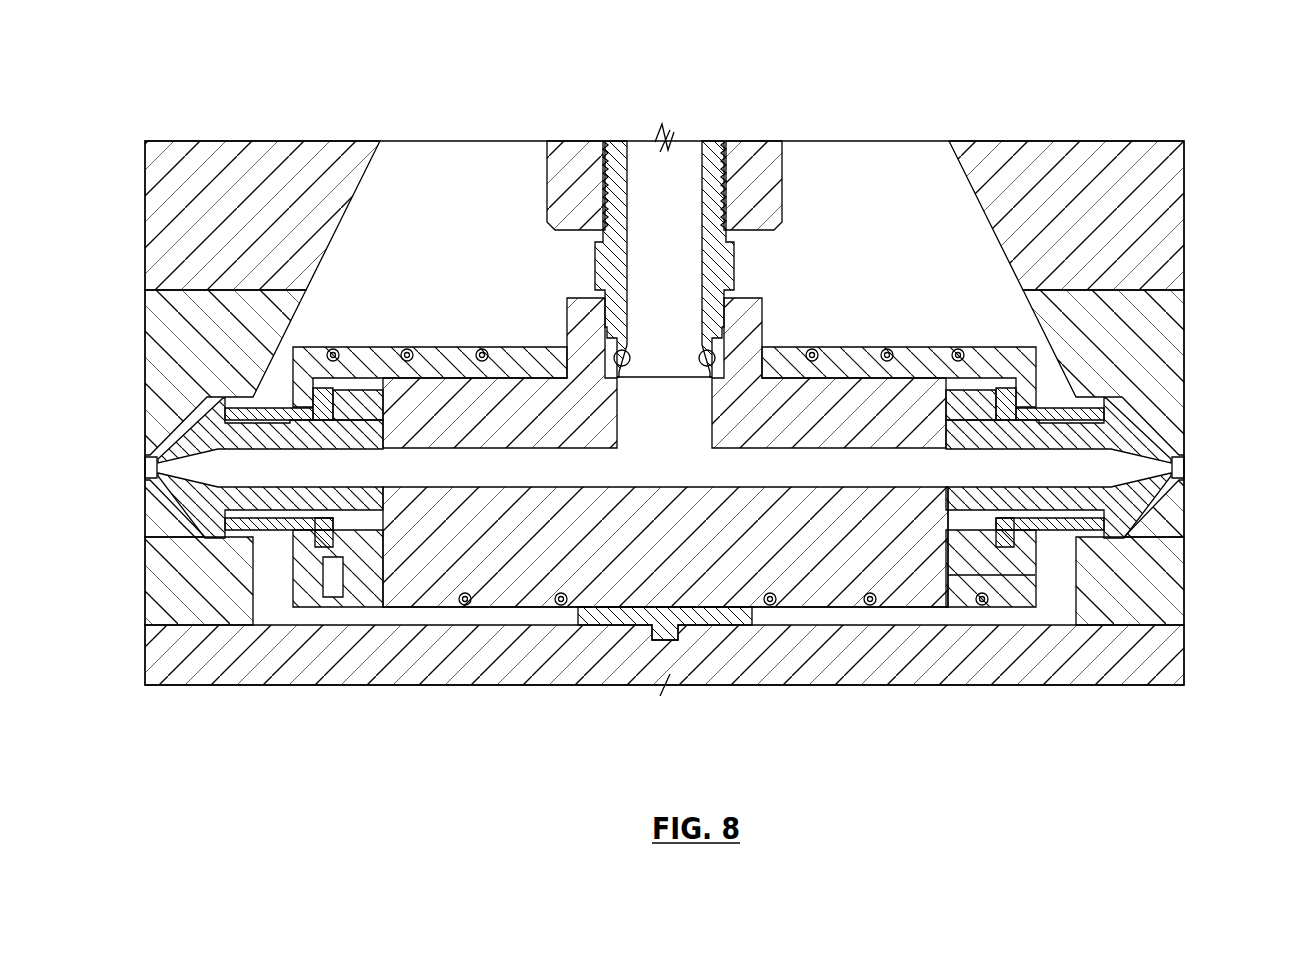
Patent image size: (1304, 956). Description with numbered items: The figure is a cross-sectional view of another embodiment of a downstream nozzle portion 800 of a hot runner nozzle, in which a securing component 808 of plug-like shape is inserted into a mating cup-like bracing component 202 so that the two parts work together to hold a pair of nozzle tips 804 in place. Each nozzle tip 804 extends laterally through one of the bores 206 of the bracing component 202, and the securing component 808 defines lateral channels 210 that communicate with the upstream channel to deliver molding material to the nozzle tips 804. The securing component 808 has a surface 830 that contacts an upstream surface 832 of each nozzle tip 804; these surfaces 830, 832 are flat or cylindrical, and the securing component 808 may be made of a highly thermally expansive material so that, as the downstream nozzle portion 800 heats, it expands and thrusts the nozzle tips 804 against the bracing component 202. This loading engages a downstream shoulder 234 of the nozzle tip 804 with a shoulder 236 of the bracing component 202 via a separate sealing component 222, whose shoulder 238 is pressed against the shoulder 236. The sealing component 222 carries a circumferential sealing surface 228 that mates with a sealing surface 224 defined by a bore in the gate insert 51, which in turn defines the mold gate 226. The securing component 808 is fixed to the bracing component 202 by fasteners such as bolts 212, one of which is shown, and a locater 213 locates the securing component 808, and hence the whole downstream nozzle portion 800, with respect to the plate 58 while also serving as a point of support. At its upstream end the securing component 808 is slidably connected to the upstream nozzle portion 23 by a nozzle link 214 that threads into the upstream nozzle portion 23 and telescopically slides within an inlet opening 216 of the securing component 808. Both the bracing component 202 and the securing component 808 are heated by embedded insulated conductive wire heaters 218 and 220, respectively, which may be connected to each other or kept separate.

The downstream nozzle portion 800 is at (1083, 93).
The upstream nozzle portion 23 is at (572, 160).
The gate insert 51 is at (172, 578).
The plate 58 is at (553, 660).
The bracing component 202 is at (830, 362).
The bores 206 is at (962, 392).
The lateral channels 210 is at (826, 470).
The bolts 212 is at (330, 597).
The locater 213 is at (660, 632).
The nozzle link 214 is at (603, 278).
The inlet opening 216 is at (615, 352).
The heater 218 is at (405, 345).
The heater 220 is at (465, 612).
The sealing component 222 is at (1008, 398).
The sealing surface 224 is at (225, 523).
The mold gate 226 is at (152, 467).
The circumferential sealing surface 228 is at (1092, 540).
The downstream shoulder 234 is at (1128, 474).
The shoulder 236 is at (1007, 547).
The shoulder 238 is at (1025, 417).
The nozzle tip 804 is at (1172, 523).
The securing component 808 is at (788, 575).
The surface 830 is at (963, 540).
The upstream surface 832 is at (915, 513).